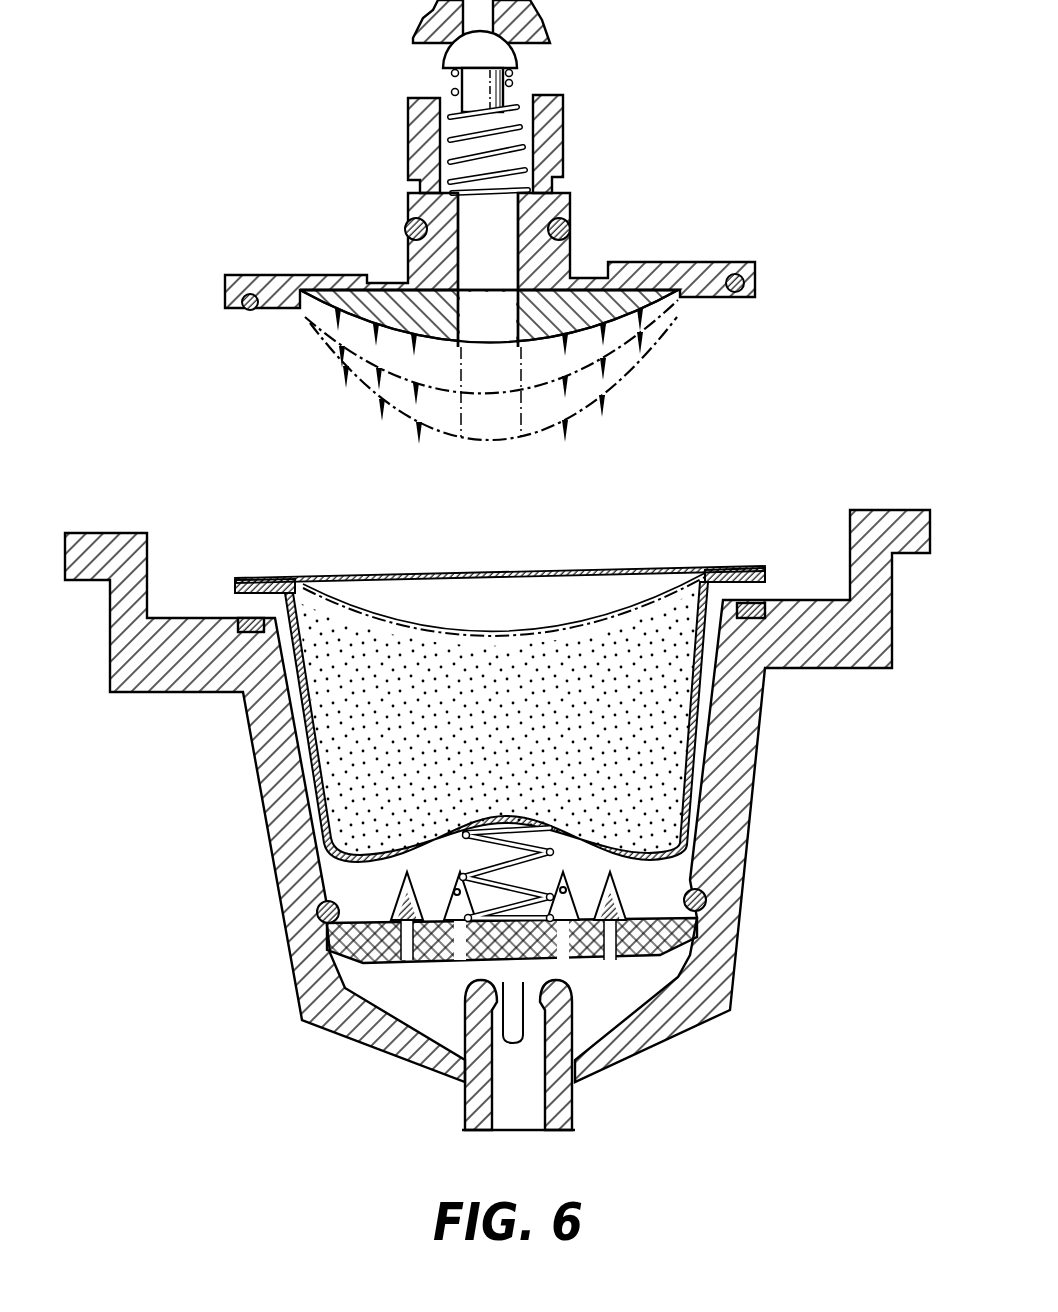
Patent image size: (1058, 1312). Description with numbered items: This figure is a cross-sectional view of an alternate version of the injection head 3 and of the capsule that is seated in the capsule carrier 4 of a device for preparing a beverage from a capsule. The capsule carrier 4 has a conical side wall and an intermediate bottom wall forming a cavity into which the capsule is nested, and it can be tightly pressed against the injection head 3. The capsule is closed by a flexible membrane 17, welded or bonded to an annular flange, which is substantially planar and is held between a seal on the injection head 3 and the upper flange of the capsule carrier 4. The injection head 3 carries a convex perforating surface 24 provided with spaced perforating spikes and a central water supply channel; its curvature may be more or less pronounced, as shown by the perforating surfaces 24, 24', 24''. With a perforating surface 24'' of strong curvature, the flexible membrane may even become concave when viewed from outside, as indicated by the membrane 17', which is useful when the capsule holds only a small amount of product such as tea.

The injection head 3 is at (603, 188).
The capsule carrier 4 is at (772, 767).
The flexible membrane 17 is at (500, 550).
The concave flexible membrane 17' is at (504, 578).
The perforating surface 24 is at (506, 341).
The perforating surface with more pronounced curvature 24' is at (494, 378).
The perforating surface with strong curvature 24'' is at (493, 404).